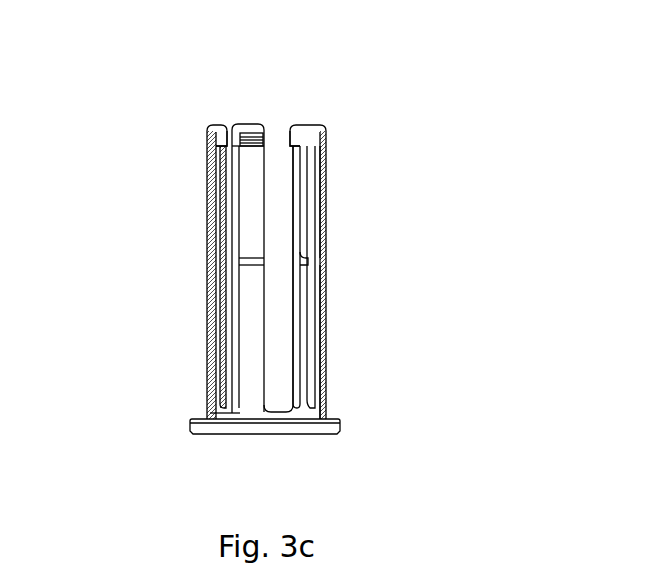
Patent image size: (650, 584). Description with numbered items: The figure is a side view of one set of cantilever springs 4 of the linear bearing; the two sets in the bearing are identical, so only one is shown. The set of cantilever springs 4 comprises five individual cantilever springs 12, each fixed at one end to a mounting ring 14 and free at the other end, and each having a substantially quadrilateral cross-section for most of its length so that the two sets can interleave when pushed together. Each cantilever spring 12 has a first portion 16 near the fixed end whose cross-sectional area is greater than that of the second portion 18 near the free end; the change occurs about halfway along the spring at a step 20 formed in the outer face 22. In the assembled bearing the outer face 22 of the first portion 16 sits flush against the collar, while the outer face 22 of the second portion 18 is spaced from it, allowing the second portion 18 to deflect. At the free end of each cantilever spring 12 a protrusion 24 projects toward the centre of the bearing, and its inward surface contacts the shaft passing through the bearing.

The set of cantilever springs 4 is at (322, 352).
The cantilever spring 12 is at (307, 313).
The mounting ring 14 is at (217, 428).
The first portion 16 is at (297, 343).
The second portion 18 is at (321, 190).
The step 20 is at (311, 263).
The outer face 22 is at (322, 284).
The protrusion 24 is at (290, 142).